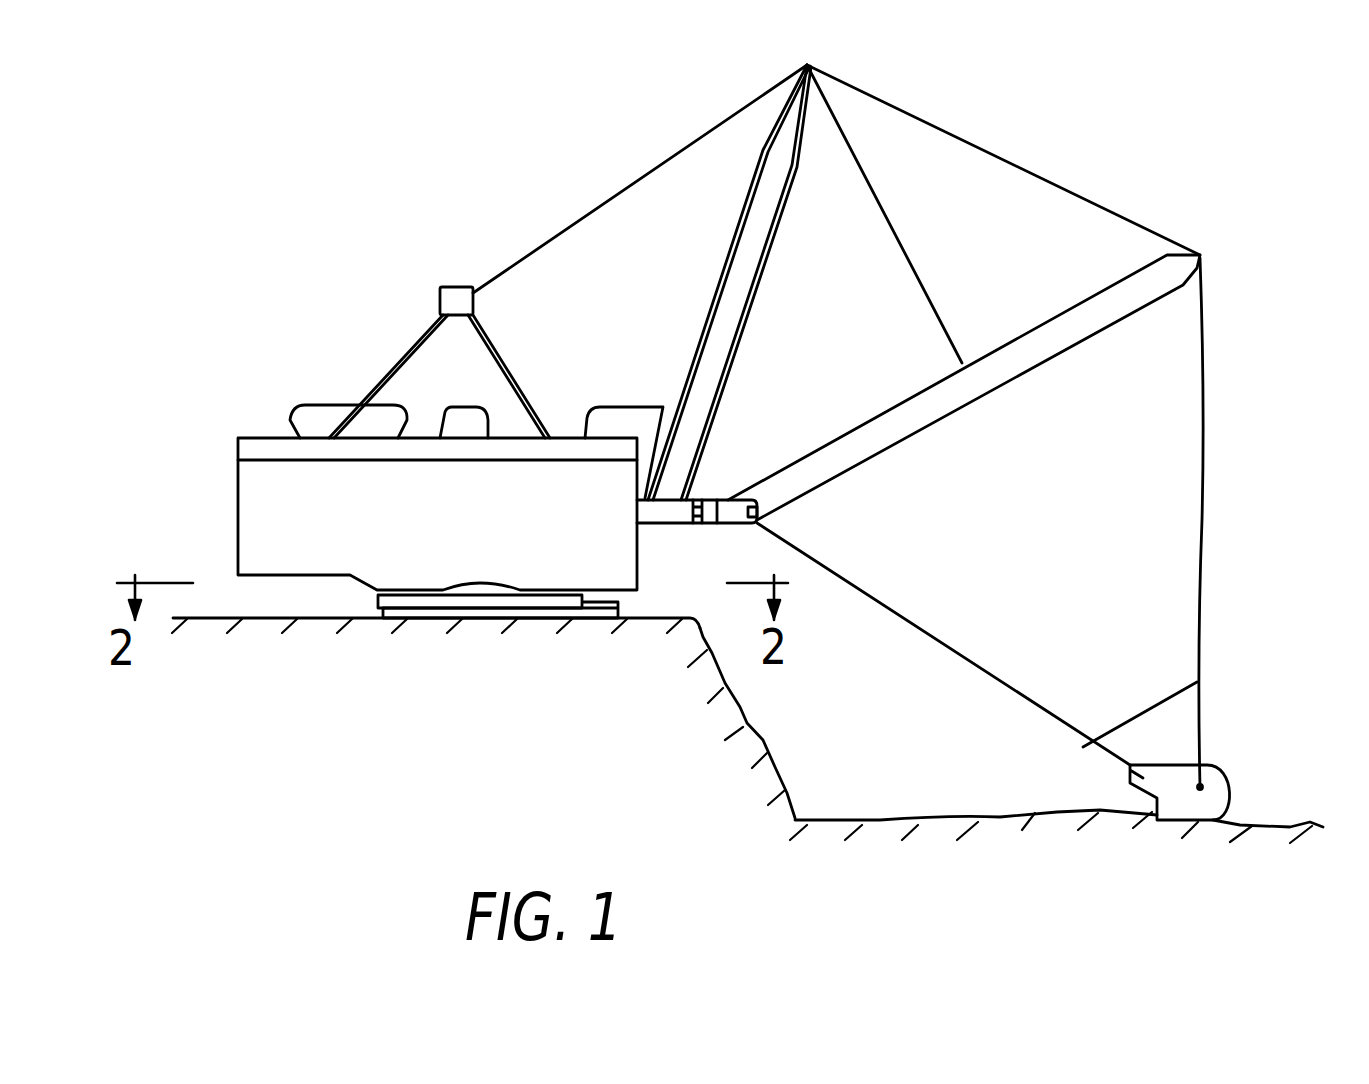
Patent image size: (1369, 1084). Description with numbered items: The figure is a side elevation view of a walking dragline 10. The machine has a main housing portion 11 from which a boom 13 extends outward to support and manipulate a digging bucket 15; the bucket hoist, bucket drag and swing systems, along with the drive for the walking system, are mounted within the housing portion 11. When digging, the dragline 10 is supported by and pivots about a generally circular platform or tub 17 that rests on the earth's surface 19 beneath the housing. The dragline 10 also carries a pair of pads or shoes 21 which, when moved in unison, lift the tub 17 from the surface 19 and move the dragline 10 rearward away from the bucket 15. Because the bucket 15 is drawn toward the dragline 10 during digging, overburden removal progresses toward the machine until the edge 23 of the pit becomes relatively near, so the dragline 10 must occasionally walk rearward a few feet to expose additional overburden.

The walking dragline 10 is at (321, 325).
The main housing portion 11 is at (260, 465).
The boom 13 is at (968, 407).
The digging bucket 15 is at (1220, 773).
The tub 17 is at (597, 612).
The earth's surface 19 is at (270, 620).
The shoes 21 is at (472, 597).
The edge of the pit 23 is at (690, 624).